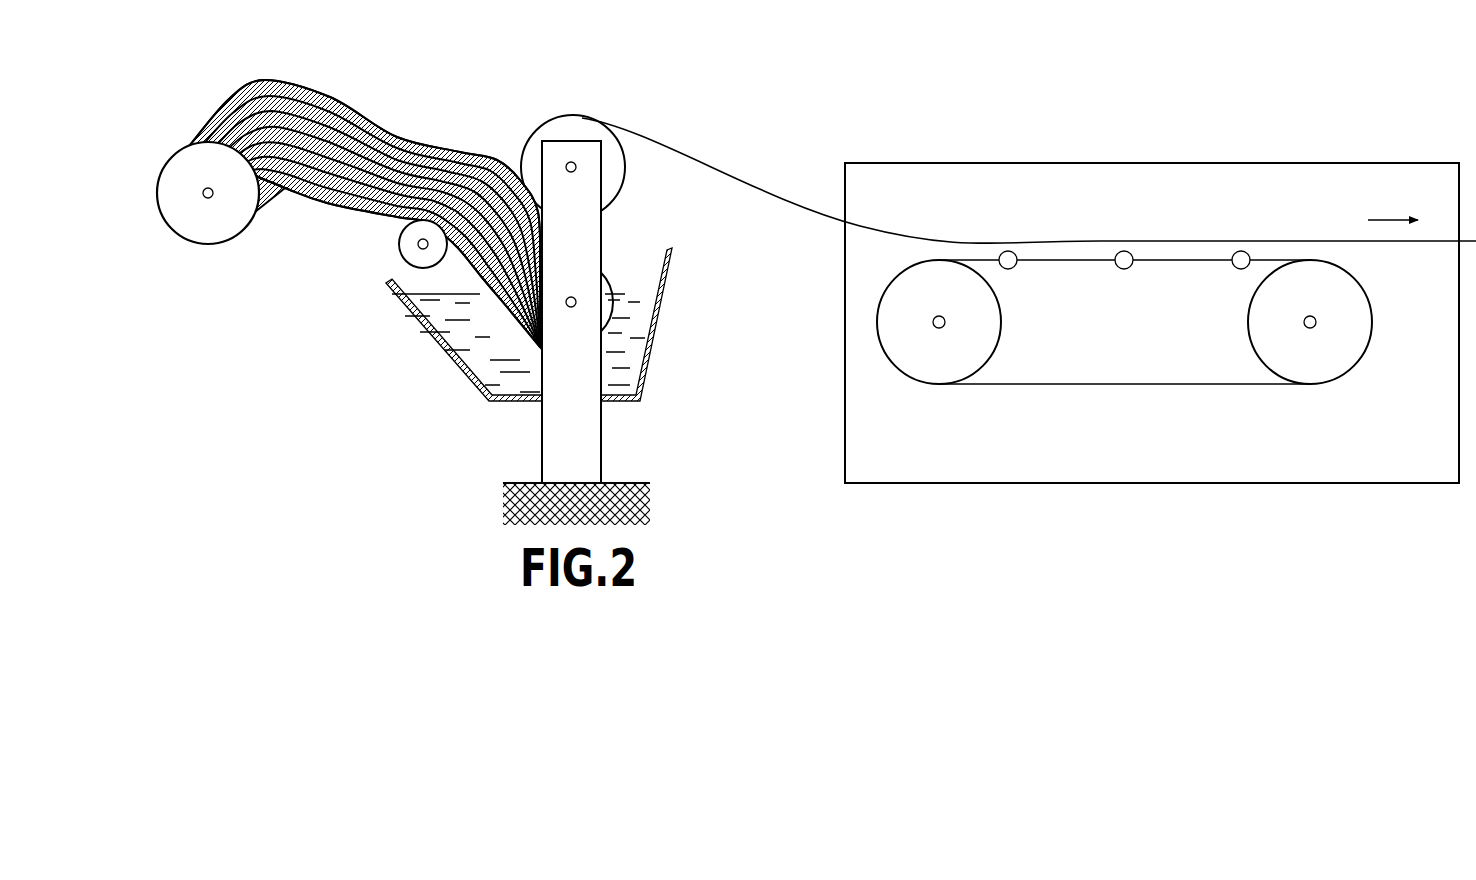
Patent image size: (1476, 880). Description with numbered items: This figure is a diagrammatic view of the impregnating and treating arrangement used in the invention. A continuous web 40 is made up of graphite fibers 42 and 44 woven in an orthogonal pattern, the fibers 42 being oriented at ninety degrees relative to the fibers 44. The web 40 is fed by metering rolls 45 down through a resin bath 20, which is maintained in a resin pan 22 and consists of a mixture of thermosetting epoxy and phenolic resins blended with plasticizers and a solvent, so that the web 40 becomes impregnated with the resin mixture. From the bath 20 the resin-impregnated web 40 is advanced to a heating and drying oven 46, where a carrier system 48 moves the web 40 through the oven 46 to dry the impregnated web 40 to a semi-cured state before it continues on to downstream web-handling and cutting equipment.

The resin bath 20 is at (460, 345).
The resin pan 22 is at (643, 363).
The continuous web 40 is at (816, 195).
The graphite fibers 42 is at (335, 197).
The graphite fibers 44 is at (388, 139).
The metering rolls 45 is at (581, 123).
The heating and drying oven 46 is at (845, 432).
The carrier system 48 is at (1042, 262).